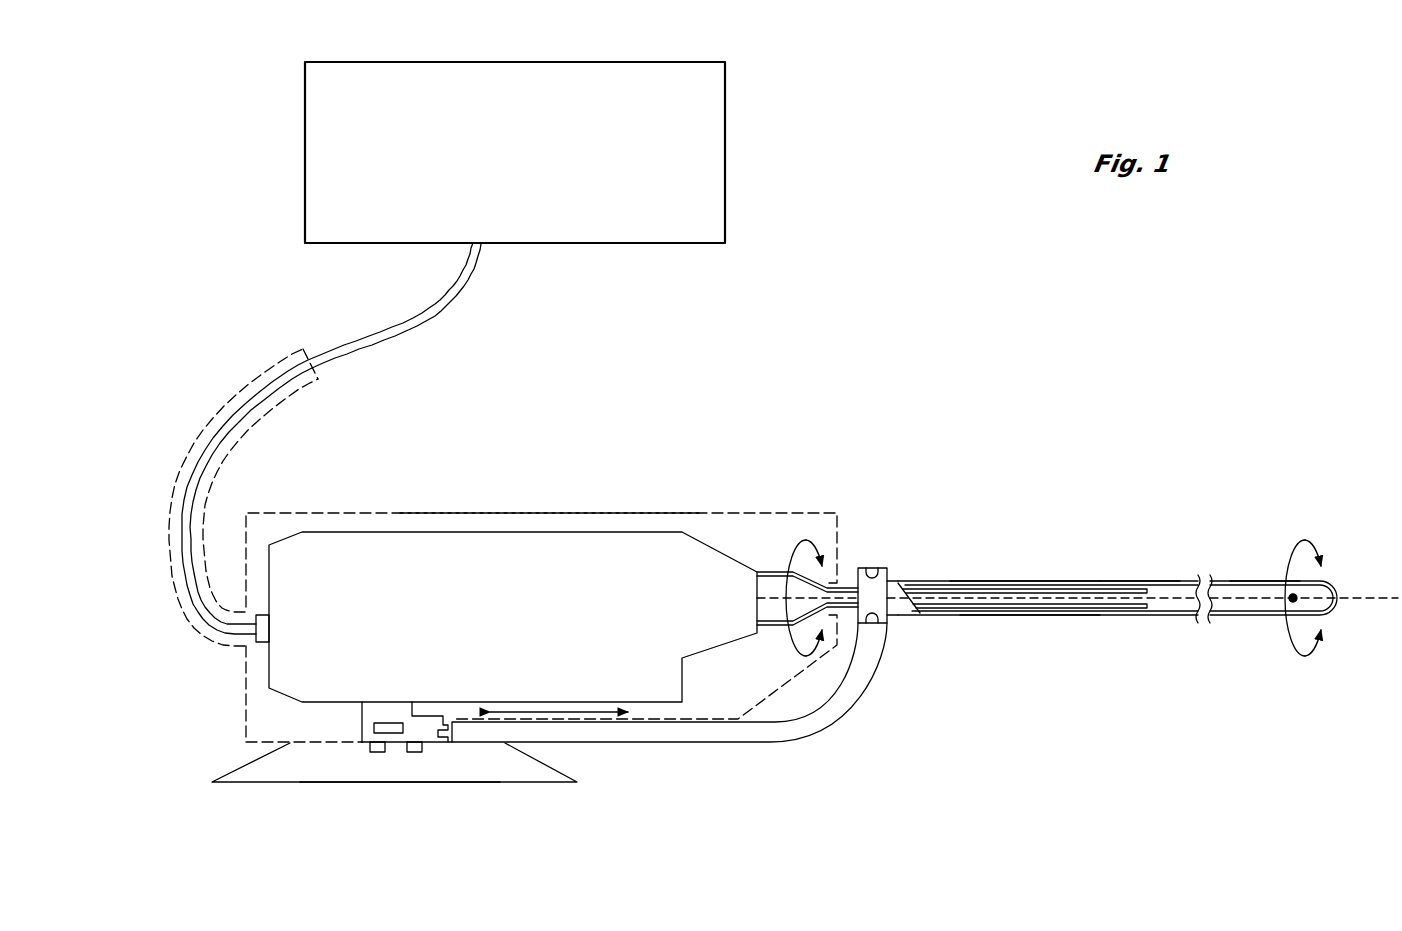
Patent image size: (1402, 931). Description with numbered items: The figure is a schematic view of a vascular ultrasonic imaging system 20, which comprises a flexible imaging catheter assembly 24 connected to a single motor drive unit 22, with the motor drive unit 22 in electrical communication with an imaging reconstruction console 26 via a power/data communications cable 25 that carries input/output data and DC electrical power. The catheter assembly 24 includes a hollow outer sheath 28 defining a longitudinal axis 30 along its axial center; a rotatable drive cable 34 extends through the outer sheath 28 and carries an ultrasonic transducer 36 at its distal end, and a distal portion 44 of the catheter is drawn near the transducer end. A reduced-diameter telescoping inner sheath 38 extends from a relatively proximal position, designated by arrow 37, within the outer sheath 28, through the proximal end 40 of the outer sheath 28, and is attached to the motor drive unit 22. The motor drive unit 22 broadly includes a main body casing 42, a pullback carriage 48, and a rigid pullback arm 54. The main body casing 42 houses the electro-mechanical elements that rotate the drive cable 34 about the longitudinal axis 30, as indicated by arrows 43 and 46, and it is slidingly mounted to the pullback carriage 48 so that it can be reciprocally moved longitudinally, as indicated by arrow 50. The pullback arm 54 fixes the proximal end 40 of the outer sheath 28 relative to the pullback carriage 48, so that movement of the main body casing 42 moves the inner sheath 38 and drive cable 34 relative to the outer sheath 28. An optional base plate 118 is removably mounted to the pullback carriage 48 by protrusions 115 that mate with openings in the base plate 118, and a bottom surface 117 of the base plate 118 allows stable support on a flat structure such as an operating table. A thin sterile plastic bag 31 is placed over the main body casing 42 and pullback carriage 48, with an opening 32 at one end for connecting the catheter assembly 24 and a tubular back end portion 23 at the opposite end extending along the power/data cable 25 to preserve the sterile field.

The ultrasonic imaging system 20 is at (1043, 404).
The motor drive unit 22 is at (633, 500).
The tubular portion of sterile bag 23 is at (168, 503).
The imaging catheter assembly 24 is at (1043, 549).
The power/data communications cable 25 is at (267, 385).
The imaging reconstruction console 26 is at (725, 150).
The outer sheath 28 is at (1087, 615).
The longitudinal axis 30 is at (1368, 600).
The sterile plastic bag 31 is at (547, 512).
The opening of sterile bag 32 is at (838, 582).
The drive cable 34 is at (1160, 598).
The ultrasonic transducer 36 is at (1298, 594).
The proximal position arrow 37 is at (1140, 577).
The inner catheter sheath 38 is at (977, 603).
The proximal end of outer sheath 40 is at (897, 580).
The main body casing 42 is at (427, 553).
The rotation arrow 43 is at (794, 553).
The distal portion 44 is at (1247, 580).
The rotation arrow 46 is at (1293, 657).
The pullback carriage 48 is at (362, 718).
The reciprocal movement arrow 50 is at (597, 714).
The pullback arm 54 is at (855, 708).
The protrusions 115 is at (414, 753).
The bottom surface of base plate 117 is at (507, 786).
The base plate 118 is at (468, 768).